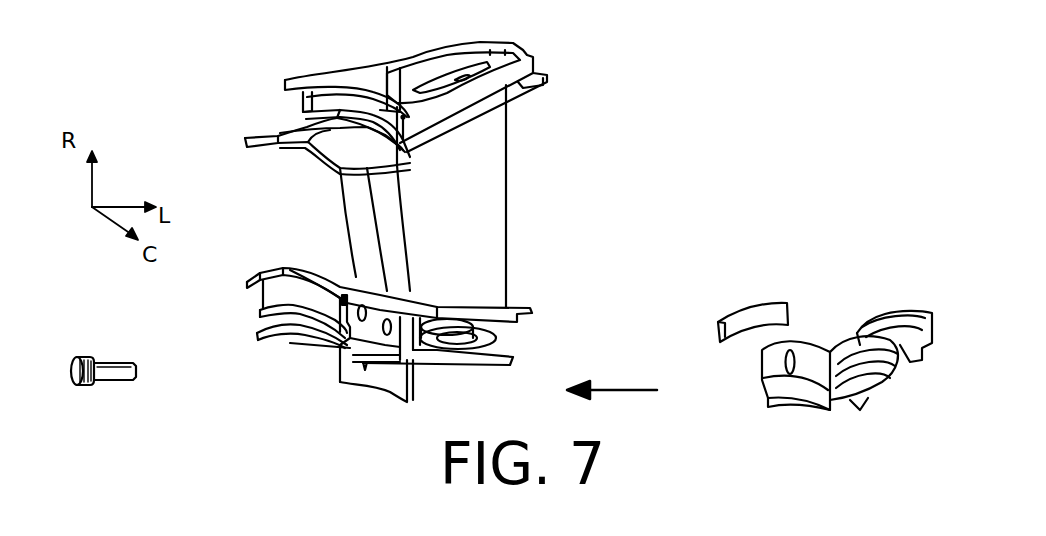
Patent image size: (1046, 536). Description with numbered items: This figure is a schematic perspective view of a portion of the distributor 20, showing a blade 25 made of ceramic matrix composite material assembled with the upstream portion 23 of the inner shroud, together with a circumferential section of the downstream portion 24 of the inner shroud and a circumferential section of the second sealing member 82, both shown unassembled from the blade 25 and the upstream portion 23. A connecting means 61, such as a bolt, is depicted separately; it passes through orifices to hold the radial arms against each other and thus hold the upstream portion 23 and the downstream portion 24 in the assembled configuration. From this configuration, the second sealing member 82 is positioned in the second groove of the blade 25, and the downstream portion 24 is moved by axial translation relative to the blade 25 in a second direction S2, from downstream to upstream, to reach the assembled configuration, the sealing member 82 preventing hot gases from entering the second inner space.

The distributor 20 is at (185, 83).
The blade 25 is at (516, 168).
The upstream portion 23 is at (308, 359).
The connecting means 61 is at (108, 356).
The second sealing member 82 is at (753, 306).
The downstream portion 24 is at (845, 319).
The second direction S2 is at (625, 388).